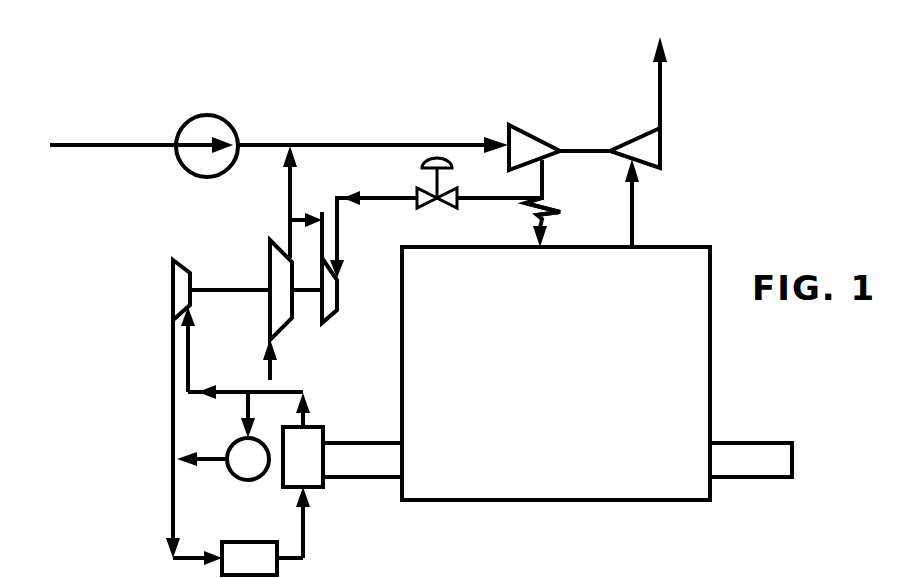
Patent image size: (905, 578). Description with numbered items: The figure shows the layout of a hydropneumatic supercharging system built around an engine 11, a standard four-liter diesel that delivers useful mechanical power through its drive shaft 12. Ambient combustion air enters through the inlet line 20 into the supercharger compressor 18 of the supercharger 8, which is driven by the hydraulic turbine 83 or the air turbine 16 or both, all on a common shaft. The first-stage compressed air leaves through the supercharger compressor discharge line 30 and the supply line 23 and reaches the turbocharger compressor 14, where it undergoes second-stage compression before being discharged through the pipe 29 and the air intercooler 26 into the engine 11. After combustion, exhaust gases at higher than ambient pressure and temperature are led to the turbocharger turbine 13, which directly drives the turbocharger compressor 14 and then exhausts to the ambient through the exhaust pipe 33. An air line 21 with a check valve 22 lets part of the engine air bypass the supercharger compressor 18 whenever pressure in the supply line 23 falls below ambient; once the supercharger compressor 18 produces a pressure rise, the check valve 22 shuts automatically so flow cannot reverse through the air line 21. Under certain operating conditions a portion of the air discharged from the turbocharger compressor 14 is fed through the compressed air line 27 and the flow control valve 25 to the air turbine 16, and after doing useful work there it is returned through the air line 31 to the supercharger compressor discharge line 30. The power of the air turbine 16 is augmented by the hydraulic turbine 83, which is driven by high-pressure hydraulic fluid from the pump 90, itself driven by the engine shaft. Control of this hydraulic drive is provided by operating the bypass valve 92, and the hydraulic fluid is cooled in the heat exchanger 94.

The supercharger 8 is at (90, 341).
The engine 11 is at (712, 268).
The drive shaft 12 is at (747, 442).
The turbocharger turbine 13 is at (660, 150).
The turbocharger compressor 14 is at (512, 125).
The air turbine 16 is at (325, 210).
The supercharger compressor 18 is at (270, 262).
The inlet line 20 is at (258, 350).
The air line 21 is at (112, 146).
The check valve 22 is at (203, 117).
The supply line 23 is at (375, 143).
The flow control valve 25 is at (437, 158).
The air intercooler 26 is at (548, 200).
The compressed air line 27 is at (488, 195).
The pipe 29 is at (541, 197).
The supercharger compressor discharge line 30 is at (290, 205).
The air line 31 is at (306, 208).
The exhaust pipe 33 is at (660, 97).
The hydraulic turbine 83 is at (170, 313).
The pump 90 is at (322, 488).
The bypass valve 92 is at (232, 473).
The heat exchanger 94 is at (222, 575).